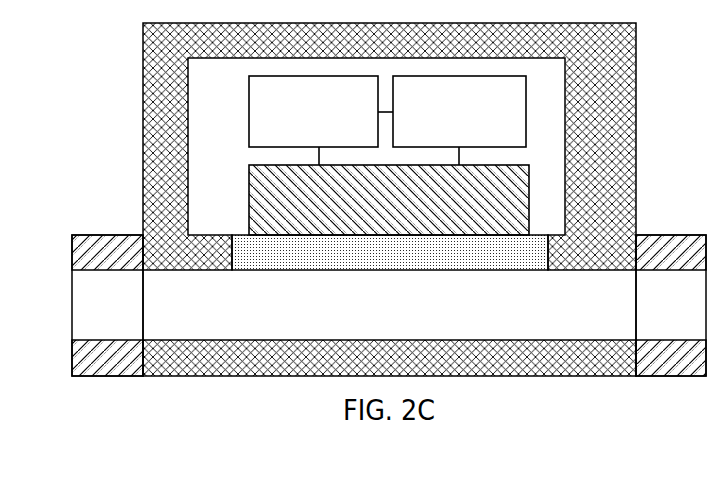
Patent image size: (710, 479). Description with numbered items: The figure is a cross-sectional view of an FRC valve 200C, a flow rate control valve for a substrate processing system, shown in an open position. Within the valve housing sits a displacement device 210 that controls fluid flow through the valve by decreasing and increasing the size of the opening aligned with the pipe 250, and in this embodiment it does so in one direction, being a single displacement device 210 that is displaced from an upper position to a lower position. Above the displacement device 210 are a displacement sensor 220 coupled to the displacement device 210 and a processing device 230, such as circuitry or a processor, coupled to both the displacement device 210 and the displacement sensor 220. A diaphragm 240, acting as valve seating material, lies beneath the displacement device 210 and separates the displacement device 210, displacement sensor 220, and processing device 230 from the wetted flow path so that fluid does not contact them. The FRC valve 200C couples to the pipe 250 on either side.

The FRC valve 200C is at (123, 42).
The displacement device 210 is at (393, 213).
The displacement sensor 220 is at (298, 123).
The processing device 230 is at (444, 123).
The diaphragm 240 is at (430, 252).
The pipe 250 is at (93, 316).